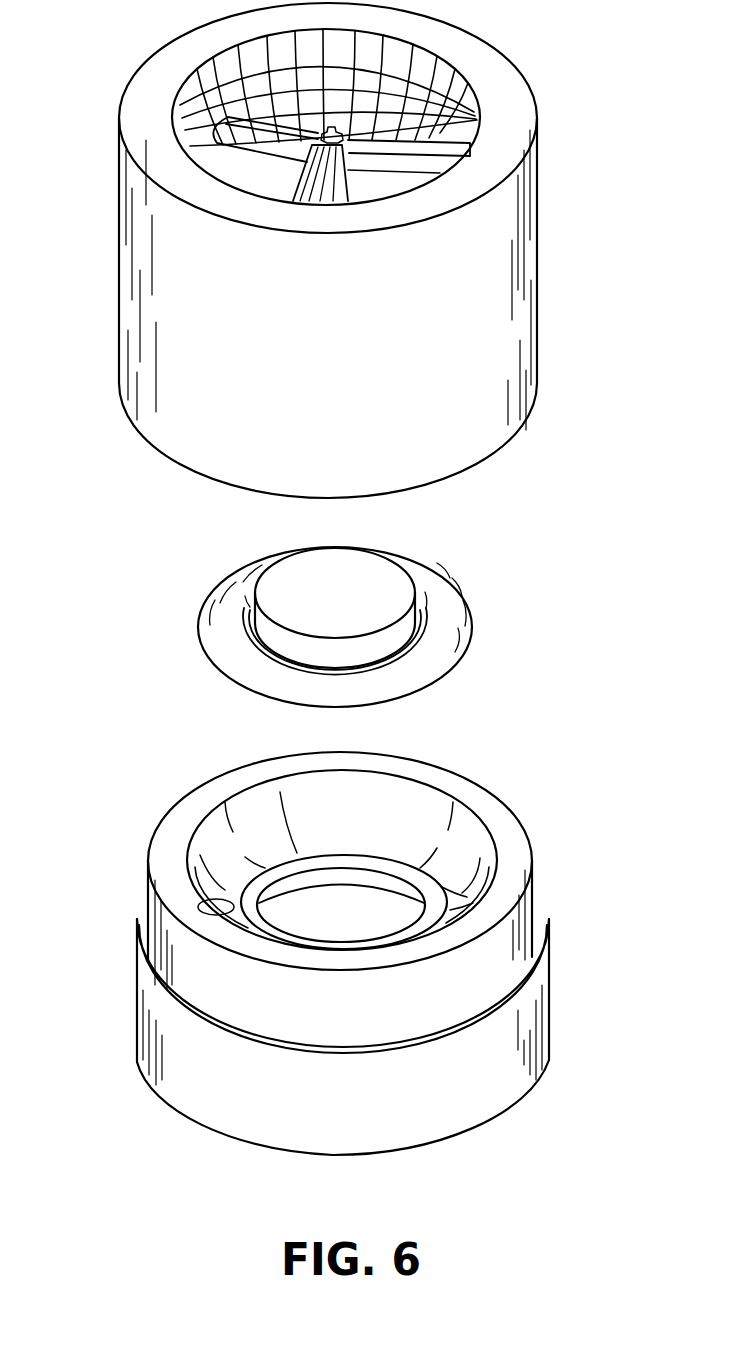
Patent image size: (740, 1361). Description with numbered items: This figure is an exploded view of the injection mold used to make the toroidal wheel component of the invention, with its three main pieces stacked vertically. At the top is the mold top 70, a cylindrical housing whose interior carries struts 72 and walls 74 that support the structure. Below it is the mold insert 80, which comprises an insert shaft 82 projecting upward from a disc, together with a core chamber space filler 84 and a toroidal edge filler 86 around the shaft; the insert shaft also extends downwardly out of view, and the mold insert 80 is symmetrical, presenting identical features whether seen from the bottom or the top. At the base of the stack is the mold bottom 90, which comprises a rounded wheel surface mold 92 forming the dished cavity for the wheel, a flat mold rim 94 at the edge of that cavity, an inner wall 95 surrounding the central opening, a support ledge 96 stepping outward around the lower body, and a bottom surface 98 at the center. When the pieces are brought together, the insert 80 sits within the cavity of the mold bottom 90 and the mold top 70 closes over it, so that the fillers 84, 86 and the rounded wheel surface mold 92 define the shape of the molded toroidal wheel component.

The mold top 70 is at (538, 272).
The struts 72 is at (440, 163).
The walls 74 is at (238, 170).
The mold insert 80 is at (357, 616).
The insert shaft 82 is at (360, 578).
The core chamber space filler 84 is at (418, 674).
The toroidal edge filler 86 is at (247, 645).
The mold bottom 90 is at (354, 948).
The rounded wheel surface mold 92 is at (393, 810).
The flat mold rim 94 is at (200, 902).
The inner wall 95 is at (333, 883).
The support ledge 96 is at (165, 993).
The bottom surface 98 is at (348, 932).